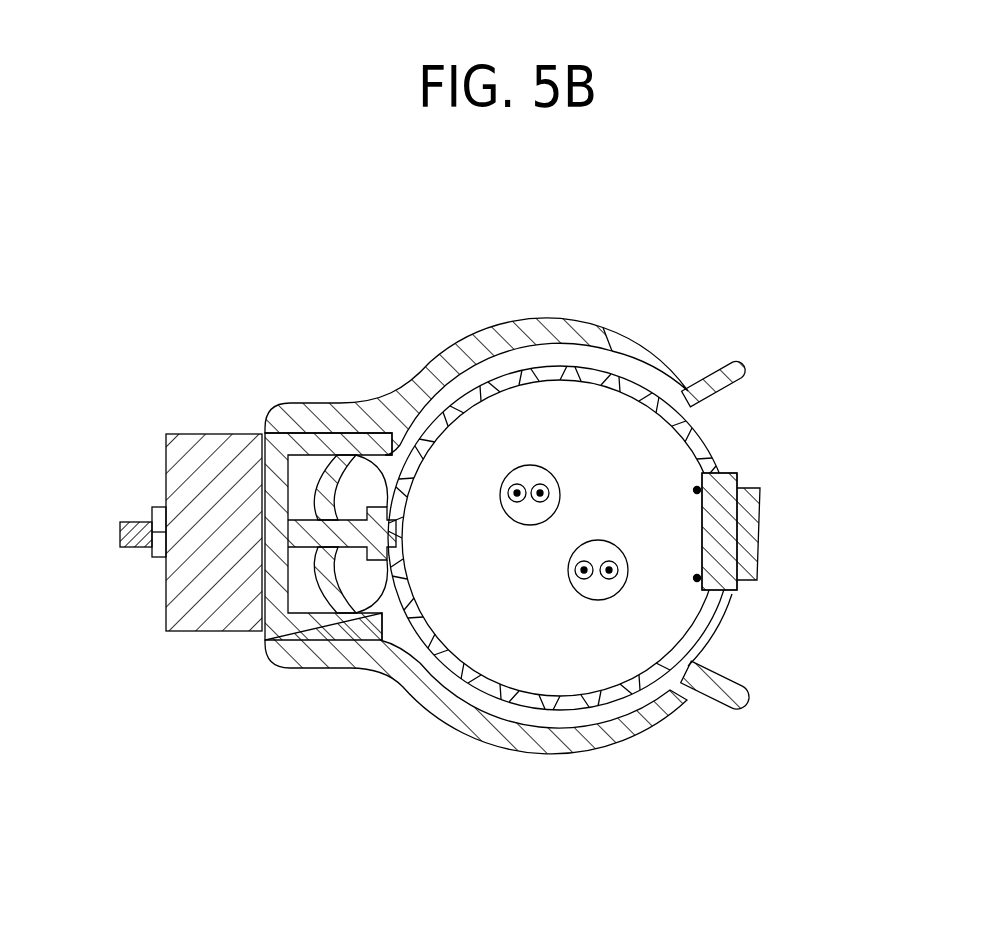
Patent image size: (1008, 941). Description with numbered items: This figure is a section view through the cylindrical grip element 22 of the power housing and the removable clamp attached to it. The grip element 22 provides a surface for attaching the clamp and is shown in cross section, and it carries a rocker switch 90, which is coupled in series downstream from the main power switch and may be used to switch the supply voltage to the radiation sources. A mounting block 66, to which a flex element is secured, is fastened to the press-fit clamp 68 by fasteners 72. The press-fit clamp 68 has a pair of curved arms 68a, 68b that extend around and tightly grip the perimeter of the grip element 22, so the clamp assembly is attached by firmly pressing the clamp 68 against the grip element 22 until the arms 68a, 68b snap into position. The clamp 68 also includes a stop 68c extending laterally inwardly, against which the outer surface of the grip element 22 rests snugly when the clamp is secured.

The grip element 22 is at (715, 620).
The mounting block 66 is at (205, 452).
The fasteners 72 is at (119, 522).
The rocker switch 90 is at (762, 492).
The press-fit clamp 68 is at (418, 362).
The curved arm 68a is at (618, 332).
The curved arm 68b is at (588, 742).
The stop 68c is at (383, 575).